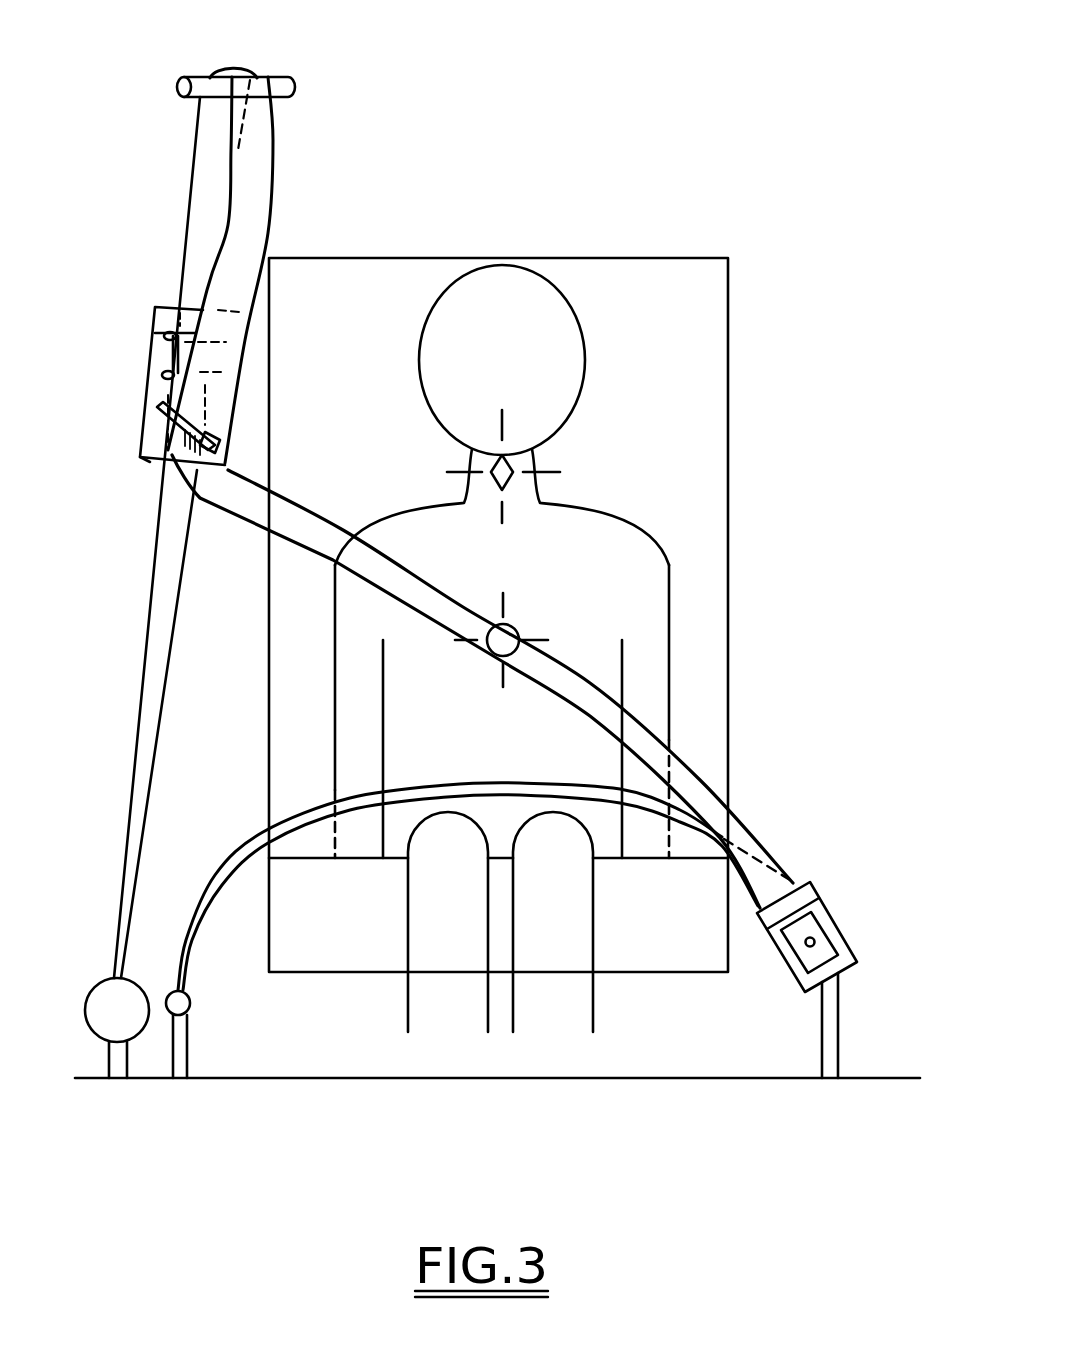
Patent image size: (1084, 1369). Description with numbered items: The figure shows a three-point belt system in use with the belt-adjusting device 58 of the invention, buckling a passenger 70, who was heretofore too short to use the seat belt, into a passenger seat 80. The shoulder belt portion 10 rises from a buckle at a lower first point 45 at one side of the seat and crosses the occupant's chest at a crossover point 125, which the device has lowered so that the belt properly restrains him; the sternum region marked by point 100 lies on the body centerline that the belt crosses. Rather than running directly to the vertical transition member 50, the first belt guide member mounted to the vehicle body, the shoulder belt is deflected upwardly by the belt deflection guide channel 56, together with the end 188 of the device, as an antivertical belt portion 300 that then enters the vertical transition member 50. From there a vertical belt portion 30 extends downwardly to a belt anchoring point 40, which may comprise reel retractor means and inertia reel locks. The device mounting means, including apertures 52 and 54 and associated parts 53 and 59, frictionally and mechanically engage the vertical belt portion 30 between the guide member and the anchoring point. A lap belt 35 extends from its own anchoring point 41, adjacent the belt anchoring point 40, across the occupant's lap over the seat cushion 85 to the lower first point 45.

The shoulder belt portion 10 is at (312, 510).
The vertical belt portion 30 is at (150, 617).
The lap belt 35 is at (200, 920).
The belt anchoring point 40 is at (102, 1033).
The lap belt anchoring point 41 is at (190, 1003).
The lower first point 45 is at (813, 897).
The vertical transition member 50 is at (273, 72).
The aperture 52 is at (153, 327).
The device mounting means 53 is at (163, 350).
The aperture 54 is at (163, 377).
The belt deflection guide channel 56 is at (230, 425).
The device 58 is at (167, 302).
The device mounting means 59 is at (180, 357).
The passenger 70 is at (553, 437).
The passenger seat 80 is at (728, 486).
The seat cushion 85 is at (282, 882).
The sternum reference point 100 is at (514, 478).
The crossover point 125 is at (517, 630).
The end 188 is at (150, 462).
The antivertical belt portion 300 is at (272, 208).